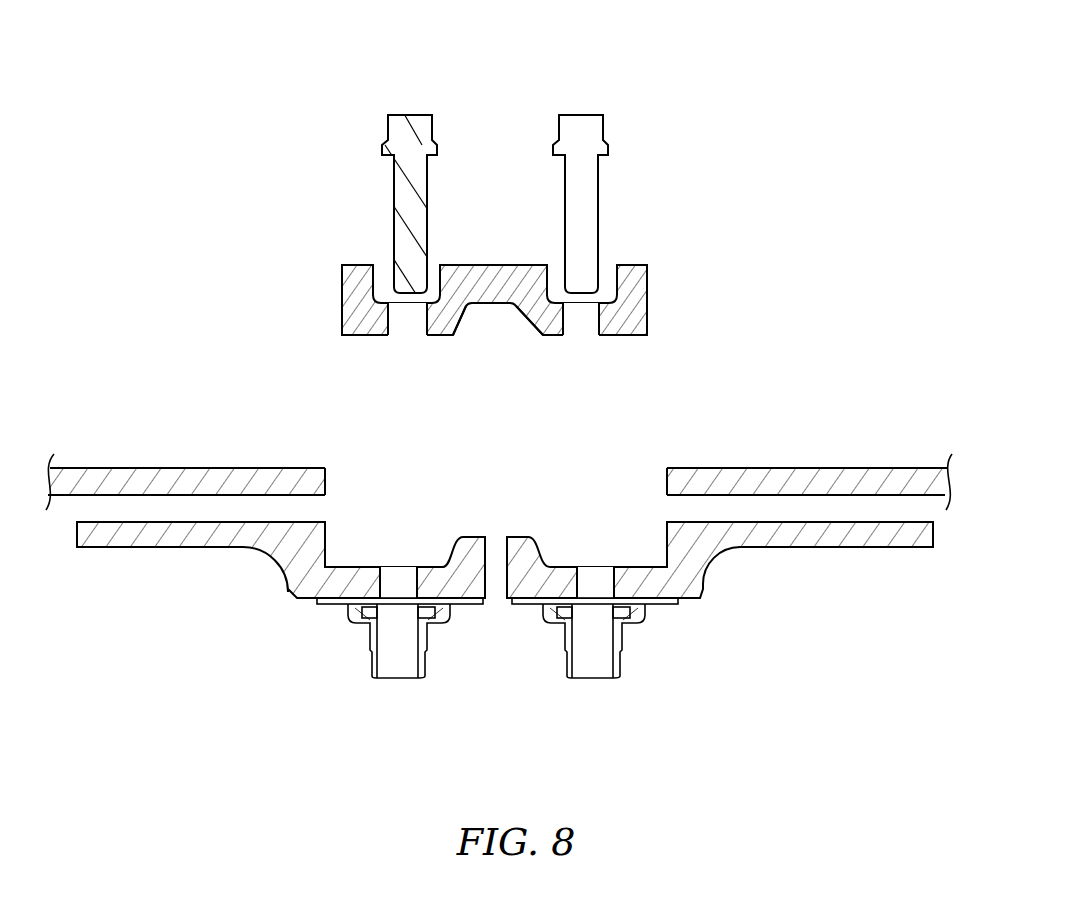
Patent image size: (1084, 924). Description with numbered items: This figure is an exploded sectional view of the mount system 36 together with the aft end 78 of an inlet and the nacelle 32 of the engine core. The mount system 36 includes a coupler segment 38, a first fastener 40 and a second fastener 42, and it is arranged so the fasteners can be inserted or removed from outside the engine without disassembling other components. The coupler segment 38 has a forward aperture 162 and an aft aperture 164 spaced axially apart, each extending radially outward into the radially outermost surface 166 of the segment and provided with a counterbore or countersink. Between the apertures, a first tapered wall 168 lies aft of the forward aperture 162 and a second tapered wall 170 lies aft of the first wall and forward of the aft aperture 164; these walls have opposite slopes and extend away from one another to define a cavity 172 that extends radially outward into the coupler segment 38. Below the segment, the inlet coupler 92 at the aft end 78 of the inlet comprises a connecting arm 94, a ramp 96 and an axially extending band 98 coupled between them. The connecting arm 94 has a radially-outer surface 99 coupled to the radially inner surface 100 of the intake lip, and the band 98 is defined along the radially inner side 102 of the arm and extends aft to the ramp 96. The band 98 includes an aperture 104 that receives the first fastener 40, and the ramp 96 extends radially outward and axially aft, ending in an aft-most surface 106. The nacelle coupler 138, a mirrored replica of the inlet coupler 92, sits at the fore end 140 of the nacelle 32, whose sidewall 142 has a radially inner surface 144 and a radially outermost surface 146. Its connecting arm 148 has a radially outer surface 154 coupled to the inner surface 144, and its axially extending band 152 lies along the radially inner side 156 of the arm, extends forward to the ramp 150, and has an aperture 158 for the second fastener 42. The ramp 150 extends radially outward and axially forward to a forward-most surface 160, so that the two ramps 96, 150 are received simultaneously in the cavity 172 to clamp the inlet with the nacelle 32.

The nacelle 32 is at (814, 431).
The mount system 36 is at (554, 299).
The coupler segment 38 is at (652, 310).
The first fastener 40 is at (412, 112).
The second fastener 42 is at (580, 112).
The aft end of the inlet 78 is at (207, 440).
The inlet coupler 92 is at (287, 599).
The connecting arm 94 is at (183, 559).
The ramp 96 is at (470, 548).
The axially extending band 98 is at (342, 585).
The radially-outer surface 99 is at (133, 512).
The radially inner surface 100 is at (208, 494).
The radially inner side 102 is at (232, 559).
The aperture 104 is at (393, 560).
The axially aft-most surface 106 is at (495, 545).
The nacelle coupler 138 is at (702, 605).
The fore end of the nacelle 140 is at (743, 458).
The sidewall 142 is at (686, 456).
The radially inner surface 144 is at (795, 495).
The radially outermost surface 146 is at (852, 468).
The connecting arm 148 is at (865, 560).
The ramp 150 is at (526, 548).
The axially extending band 152 is at (634, 585).
The radially outer surface 154 is at (884, 524).
The radially inner side 156 is at (797, 560).
The aperture 158 is at (598, 558).
The axially forward-most surface 160 is at (500, 588).
The forward aperture 162 is at (408, 347).
The aft aperture 164 is at (580, 347).
The radially outermost surface 166 is at (452, 263).
The first tapered wall 168 is at (470, 345).
The second tapered wall 170 is at (516, 345).
The cavity 172 is at (488, 347).